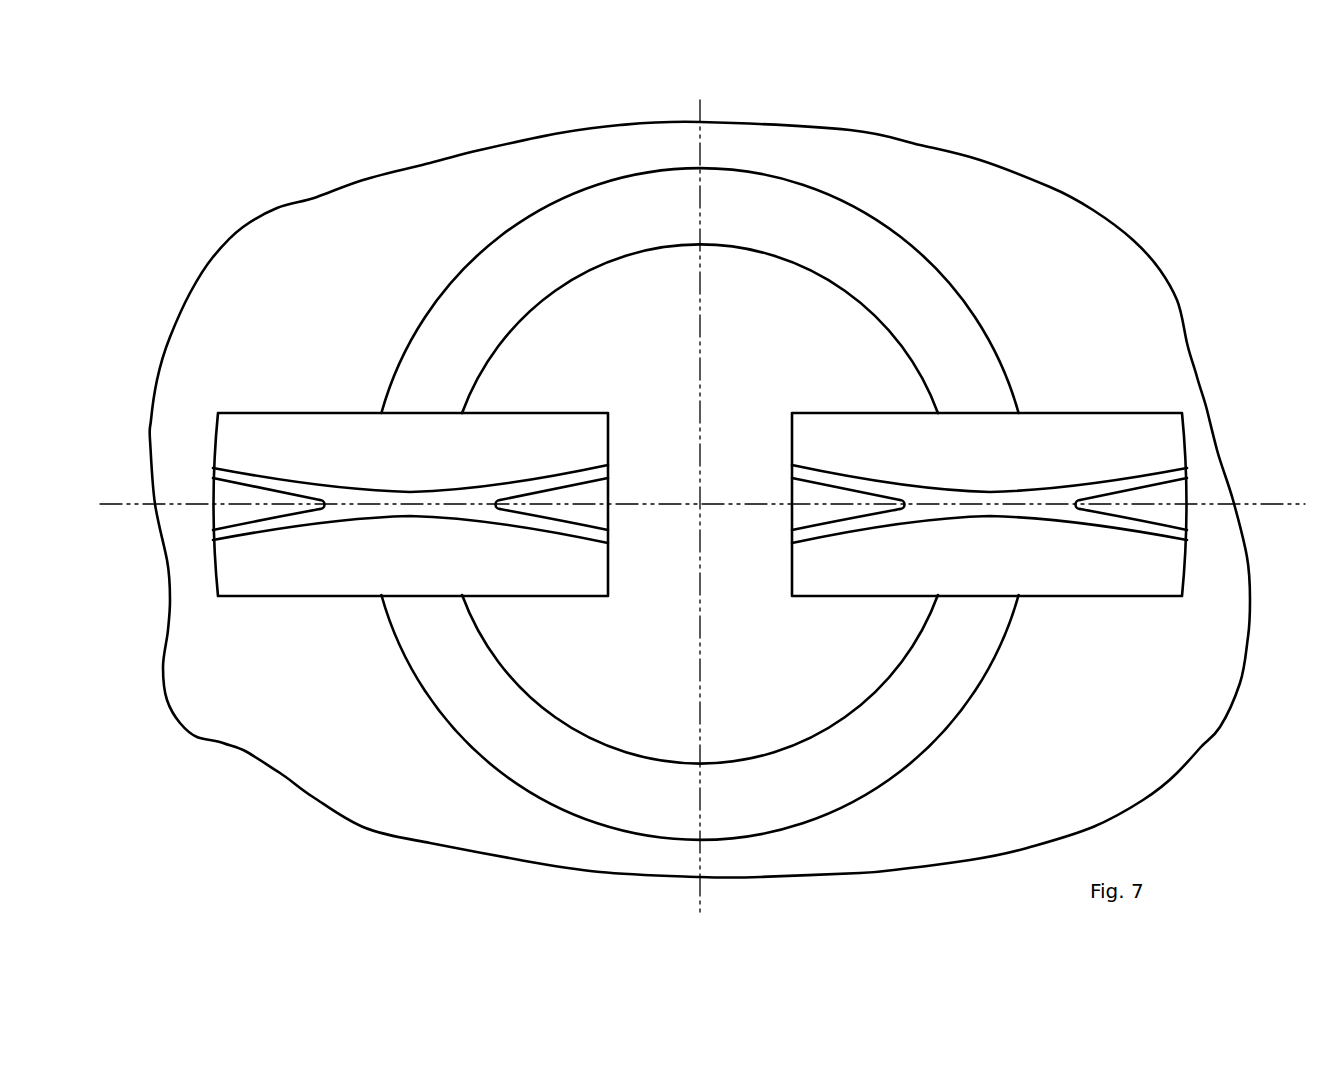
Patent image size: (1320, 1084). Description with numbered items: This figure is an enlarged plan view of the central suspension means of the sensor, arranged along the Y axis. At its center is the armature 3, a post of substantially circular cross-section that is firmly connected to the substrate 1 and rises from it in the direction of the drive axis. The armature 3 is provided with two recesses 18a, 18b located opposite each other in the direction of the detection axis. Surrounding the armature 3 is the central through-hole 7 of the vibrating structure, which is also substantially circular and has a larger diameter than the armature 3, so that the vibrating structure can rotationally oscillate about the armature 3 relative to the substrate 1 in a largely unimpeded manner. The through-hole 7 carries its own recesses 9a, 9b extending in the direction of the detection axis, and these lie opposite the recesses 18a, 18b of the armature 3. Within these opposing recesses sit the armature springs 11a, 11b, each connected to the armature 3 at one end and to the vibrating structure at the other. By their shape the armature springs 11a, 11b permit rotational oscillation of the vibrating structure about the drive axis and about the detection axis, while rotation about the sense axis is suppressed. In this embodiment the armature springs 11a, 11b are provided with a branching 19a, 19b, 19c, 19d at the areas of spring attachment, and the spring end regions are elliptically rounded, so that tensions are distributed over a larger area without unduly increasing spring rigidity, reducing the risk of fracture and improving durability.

The substrate 1 is at (1070, 243).
The armature 3 is at (795, 362).
The central through-hole 7 is at (800, 226).
The recess 9a is at (287, 560).
The recess 9b is at (1140, 435).
The armature spring 11a is at (355, 497).
The armature spring 11b is at (1032, 508).
The recess 18a is at (500, 450).
The recess 18b is at (972, 447).
The branching 19a is at (243, 525).
The branching 19b is at (235, 470).
The branching 19c is at (553, 523).
The branching 19d is at (542, 482).